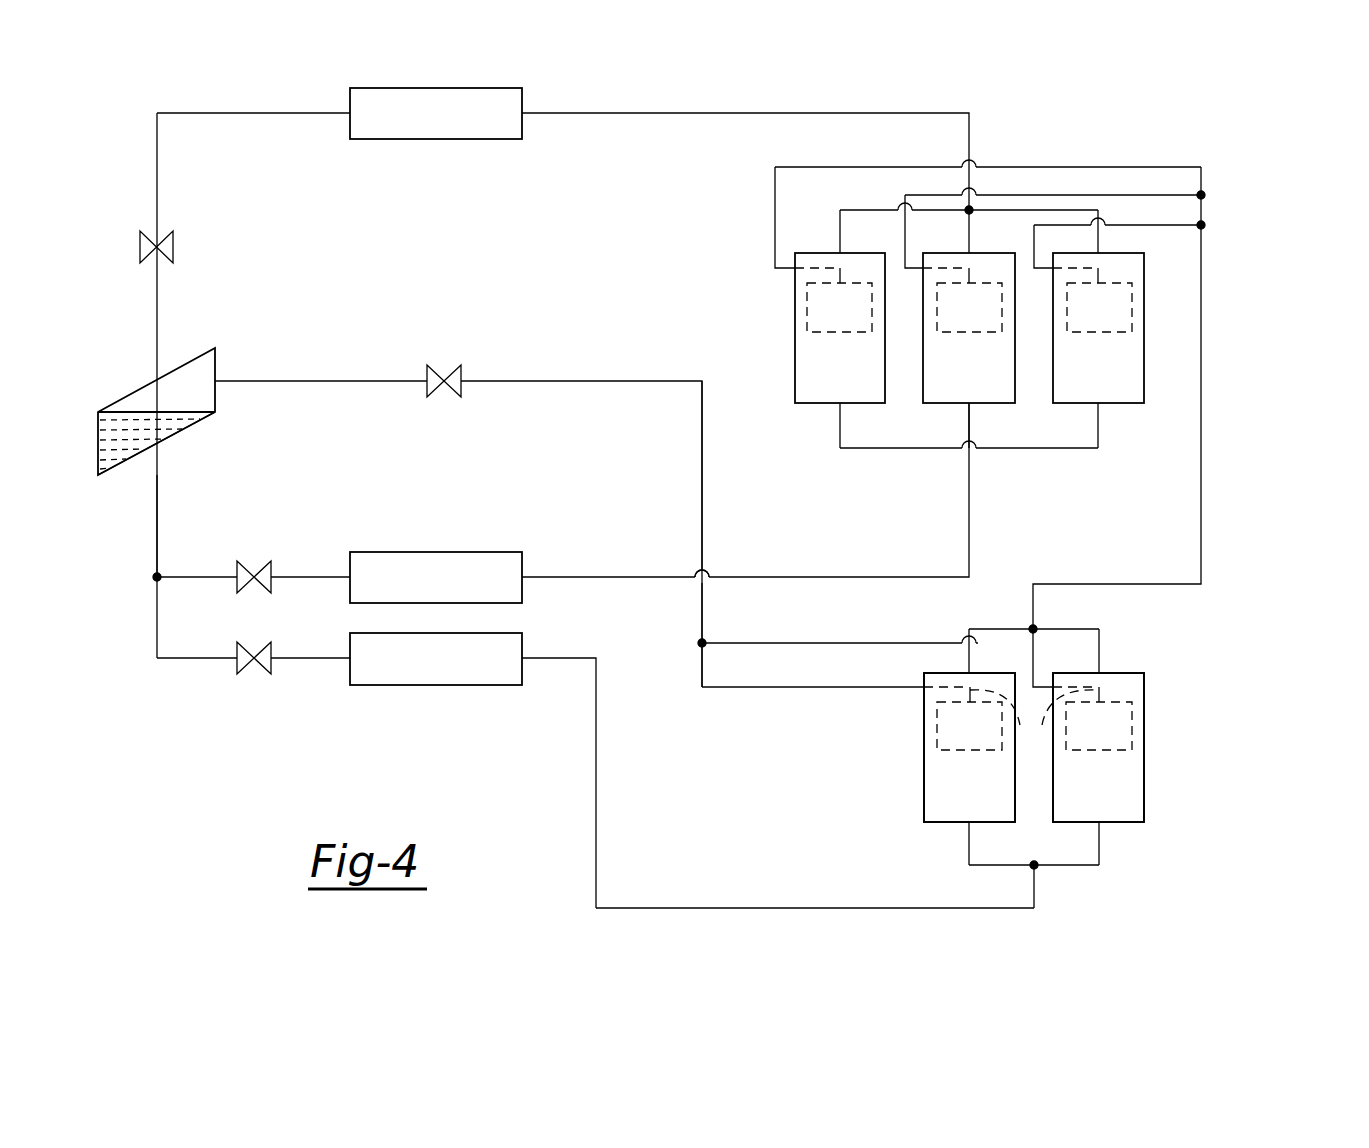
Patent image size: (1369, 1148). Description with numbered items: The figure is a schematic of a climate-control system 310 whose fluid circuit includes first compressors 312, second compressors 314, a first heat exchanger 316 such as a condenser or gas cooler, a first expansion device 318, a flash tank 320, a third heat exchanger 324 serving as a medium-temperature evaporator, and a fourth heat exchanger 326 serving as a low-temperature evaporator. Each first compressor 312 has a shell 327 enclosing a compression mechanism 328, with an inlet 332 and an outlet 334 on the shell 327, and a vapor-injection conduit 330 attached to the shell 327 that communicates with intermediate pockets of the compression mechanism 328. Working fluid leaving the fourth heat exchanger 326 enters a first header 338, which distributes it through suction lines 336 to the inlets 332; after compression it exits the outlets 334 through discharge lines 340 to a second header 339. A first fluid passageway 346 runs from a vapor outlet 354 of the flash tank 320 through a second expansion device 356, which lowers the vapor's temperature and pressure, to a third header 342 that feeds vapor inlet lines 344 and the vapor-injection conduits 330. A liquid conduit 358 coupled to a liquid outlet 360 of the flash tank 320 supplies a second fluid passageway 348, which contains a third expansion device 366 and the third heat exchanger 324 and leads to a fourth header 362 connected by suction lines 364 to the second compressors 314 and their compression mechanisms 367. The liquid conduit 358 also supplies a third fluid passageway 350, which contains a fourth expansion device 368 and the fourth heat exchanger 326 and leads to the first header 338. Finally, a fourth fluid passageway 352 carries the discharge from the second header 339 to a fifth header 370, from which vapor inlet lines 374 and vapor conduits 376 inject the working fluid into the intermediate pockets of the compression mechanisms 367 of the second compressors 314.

The climate-control system 310 is at (752, 831).
The first compressors 312 is at (1033, 767).
The second compressors 314 is at (946, 334).
The first heat exchanger 316 is at (380, 104).
The first expansion device 318 is at (118, 235).
The flash tank 320 is at (148, 393).
The third heat exchanger 324 is at (659, 503).
The fourth heat exchanger 326 is at (488, 762).
The shell 327 is at (1034, 747).
The compression mechanism 328 is at (1034, 758).
The vapor-injection conduit 330 is at (1034, 717).
The inlet 332 is at (1035, 847).
The outlet 334 is at (1038, 639).
The suction lines 336 is at (1034, 842).
The first header 338 is at (1104, 898).
The second header 339 is at (1034, 572).
The discharge lines 340 is at (1037, 639).
The third header 342 is at (665, 568).
The vapor inlet lines 344 is at (825, 681).
The first fluid passageway 346 is at (321, 325).
The second fluid passageway 348 is at (310, 522).
The third fluid passageway 350 is at (197, 706).
The fourth fluid passageway 352 is at (1182, 398).
The vapor outlet 354 is at (458, 534).
The second expansion device 356 is at (481, 358).
The liquid conduit 358 is at (209, 526).
The liquid outlet 360 is at (156, 474).
The fourth header 362 is at (938, 488).
The suction lines 364 is at (1018, 442).
The third expansion device 366 is at (214, 589).
The compression mechanisms 367 is at (969, 342).
The fourth expansion device 368 is at (293, 644).
The fifth header 370 is at (1123, 228).
The vapor inlet lines 374 is at (988, 186).
The vapor conduits 376 is at (1051, 225).